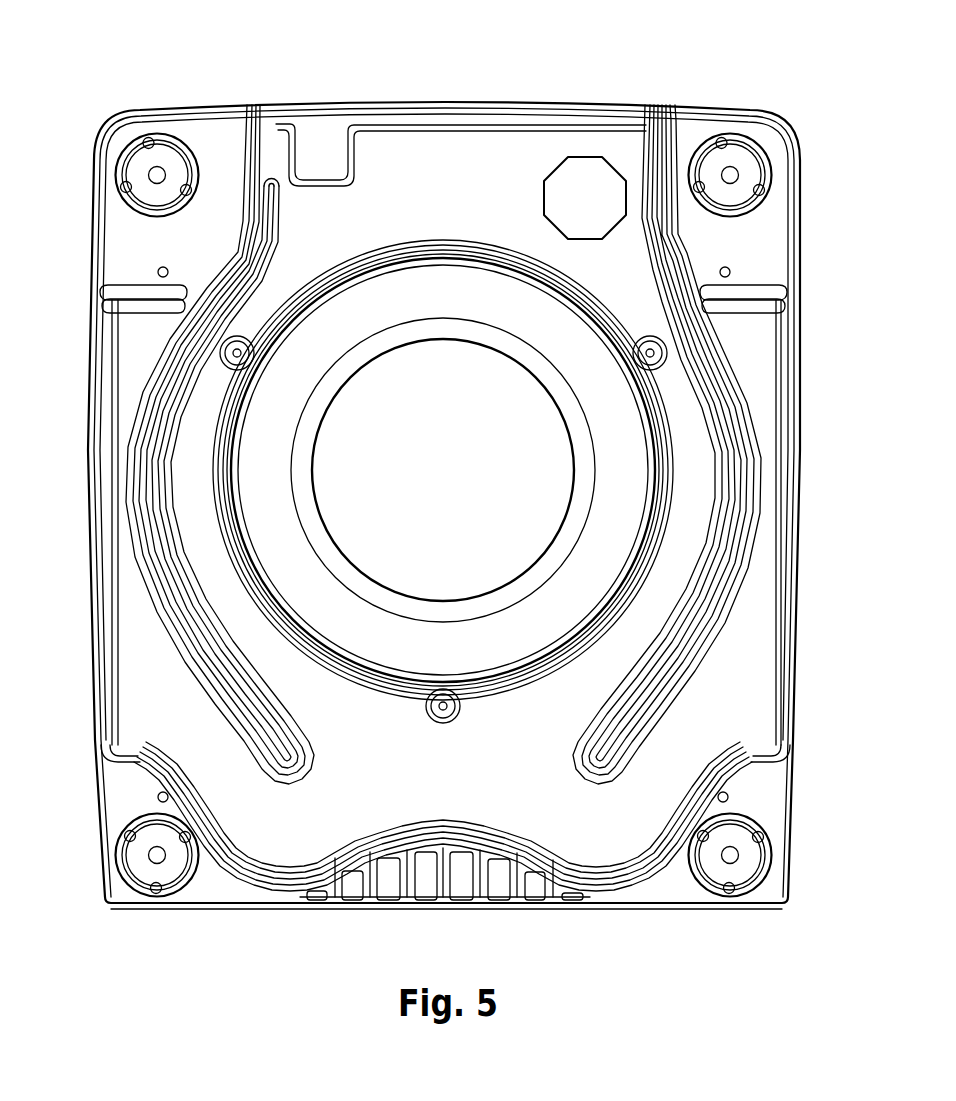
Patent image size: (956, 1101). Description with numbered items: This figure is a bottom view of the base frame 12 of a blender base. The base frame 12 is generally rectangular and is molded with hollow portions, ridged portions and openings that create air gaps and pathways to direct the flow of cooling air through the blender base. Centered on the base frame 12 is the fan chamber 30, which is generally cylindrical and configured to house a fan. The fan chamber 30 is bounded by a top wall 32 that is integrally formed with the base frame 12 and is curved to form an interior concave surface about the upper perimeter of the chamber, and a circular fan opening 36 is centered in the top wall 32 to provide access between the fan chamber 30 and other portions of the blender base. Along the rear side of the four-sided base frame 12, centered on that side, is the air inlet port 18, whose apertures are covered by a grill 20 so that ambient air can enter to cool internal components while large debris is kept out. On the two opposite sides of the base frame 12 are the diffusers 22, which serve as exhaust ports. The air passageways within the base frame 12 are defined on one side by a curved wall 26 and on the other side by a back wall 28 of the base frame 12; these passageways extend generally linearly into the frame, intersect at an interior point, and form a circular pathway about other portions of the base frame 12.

The base frame 12 is at (488, 76).
The air inlet port 18 is at (390, 887).
The grill 20 is at (445, 877).
The diffuser 22 is at (137, 573).
The curved wall 26 is at (277, 737).
The back wall 28 is at (494, 842).
The fan chamber 30 is at (237, 392).
The top wall 32 is at (362, 318).
The fan opening 36 is at (500, 495).